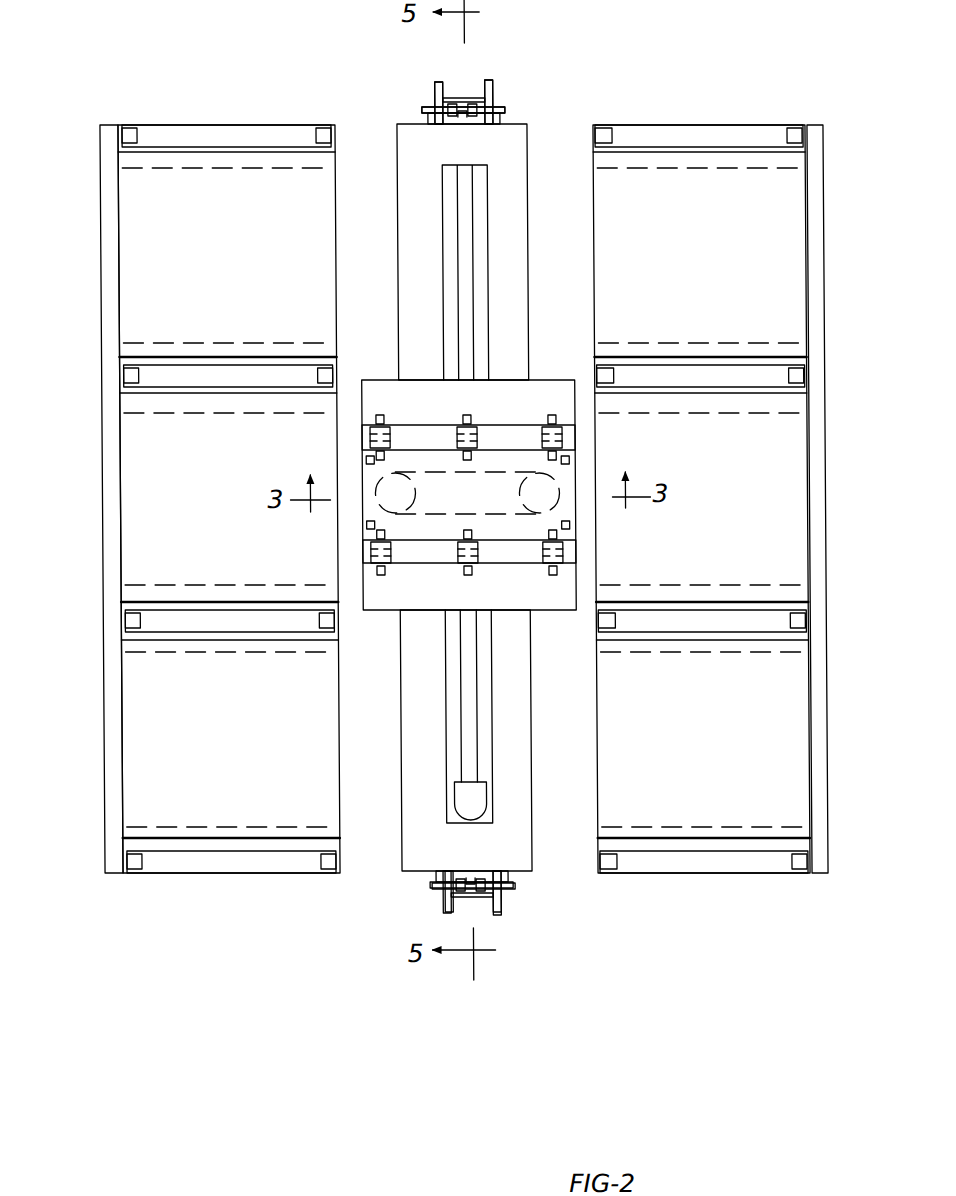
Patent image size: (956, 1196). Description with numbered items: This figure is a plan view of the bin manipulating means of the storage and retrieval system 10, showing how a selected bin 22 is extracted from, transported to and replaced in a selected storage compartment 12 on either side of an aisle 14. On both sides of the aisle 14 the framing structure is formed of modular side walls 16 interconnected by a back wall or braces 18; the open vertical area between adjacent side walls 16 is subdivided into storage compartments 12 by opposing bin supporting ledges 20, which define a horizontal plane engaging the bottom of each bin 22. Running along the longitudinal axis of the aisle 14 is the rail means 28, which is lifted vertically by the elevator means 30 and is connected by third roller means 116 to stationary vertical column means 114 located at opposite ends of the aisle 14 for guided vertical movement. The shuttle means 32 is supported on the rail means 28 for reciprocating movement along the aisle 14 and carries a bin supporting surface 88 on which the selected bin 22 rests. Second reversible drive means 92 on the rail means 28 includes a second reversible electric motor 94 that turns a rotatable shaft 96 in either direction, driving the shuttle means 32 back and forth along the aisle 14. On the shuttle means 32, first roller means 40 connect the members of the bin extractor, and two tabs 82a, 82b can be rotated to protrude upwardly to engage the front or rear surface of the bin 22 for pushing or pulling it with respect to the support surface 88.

The storage and retrieval system 10 is at (548, 405).
The storage compartments 12 is at (788, 752).
The aisle 14 is at (547, 156).
The modular side walls 16 is at (196, 130).
The back wall or braces 18 is at (105, 535).
The bin supporting ledges 20 is at (190, 170).
The bin 22 is at (130, 224).
The rail means 28 is at (532, 727).
The elevator means 30 is at (507, 93).
The shuttle means 32 is at (540, 577).
The first roller means 40 is at (472, 436).
The tab 82a is at (368, 456).
The tab 82b is at (568, 460).
The bin supporting surface 88 is at (430, 390).
The second reversible drive means 92 is at (484, 770).
The second reversible electric motor 94 is at (458, 800).
The rotatable shaft 96 is at (462, 718).
The stationary vertical column means 114 is at (438, 84).
The third roller means 116 is at (460, 128).